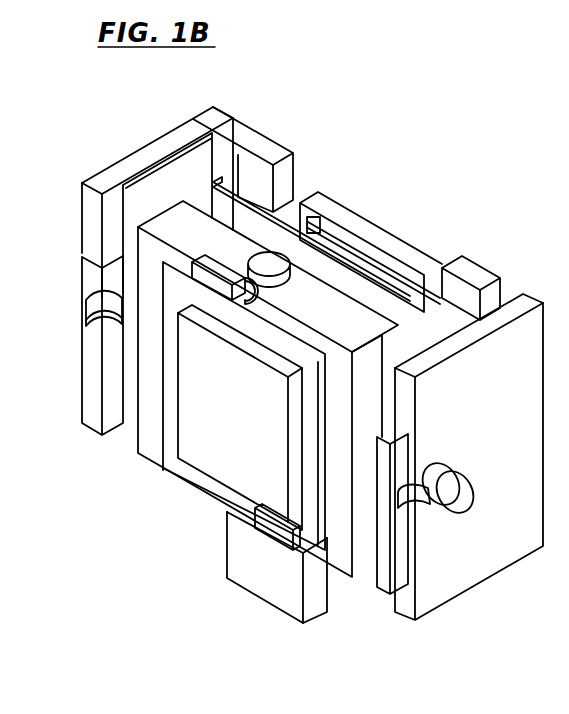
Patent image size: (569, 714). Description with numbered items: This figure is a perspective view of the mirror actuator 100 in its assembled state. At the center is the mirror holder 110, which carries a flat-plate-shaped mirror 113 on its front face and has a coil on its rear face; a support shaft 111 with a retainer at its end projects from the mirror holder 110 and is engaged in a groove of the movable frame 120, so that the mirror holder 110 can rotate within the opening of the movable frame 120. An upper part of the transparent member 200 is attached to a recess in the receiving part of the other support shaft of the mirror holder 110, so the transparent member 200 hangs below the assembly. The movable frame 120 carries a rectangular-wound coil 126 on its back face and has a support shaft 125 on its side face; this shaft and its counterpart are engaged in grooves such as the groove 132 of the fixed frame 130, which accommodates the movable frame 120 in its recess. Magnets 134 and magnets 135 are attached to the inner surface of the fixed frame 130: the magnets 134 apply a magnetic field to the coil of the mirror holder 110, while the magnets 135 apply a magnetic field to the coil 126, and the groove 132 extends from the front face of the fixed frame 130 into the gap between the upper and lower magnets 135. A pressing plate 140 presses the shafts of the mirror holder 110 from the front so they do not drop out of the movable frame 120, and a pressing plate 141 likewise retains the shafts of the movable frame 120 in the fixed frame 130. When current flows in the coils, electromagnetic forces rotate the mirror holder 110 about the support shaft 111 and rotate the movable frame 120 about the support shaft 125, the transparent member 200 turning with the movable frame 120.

The mirror actuator 100 is at (438, 140).
The mirror holder 110 is at (293, 351).
The support shaft 111 is at (366, 260).
The mirror 113 is at (193, 430).
The movable frame 120 is at (175, 223).
The support shaft 125 is at (458, 472).
The coil 126 is at (262, 213).
The fixed frame 130 is at (460, 580).
The groove 132 is at (86, 304).
The magnet 134 is at (390, 273).
The magnet 135 is at (213, 148).
The pressing plate 140 is at (272, 322).
The pressing plate 141 is at (90, 348).
The transparent member 200 is at (273, 602).